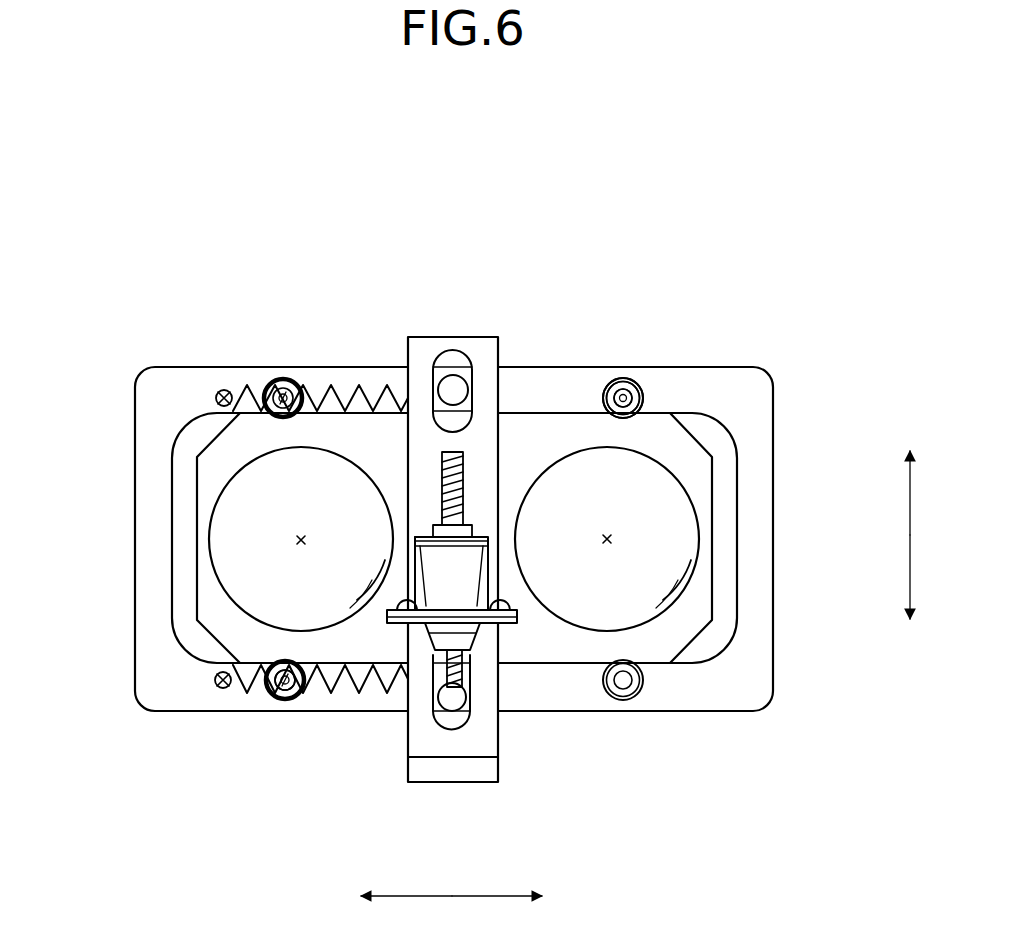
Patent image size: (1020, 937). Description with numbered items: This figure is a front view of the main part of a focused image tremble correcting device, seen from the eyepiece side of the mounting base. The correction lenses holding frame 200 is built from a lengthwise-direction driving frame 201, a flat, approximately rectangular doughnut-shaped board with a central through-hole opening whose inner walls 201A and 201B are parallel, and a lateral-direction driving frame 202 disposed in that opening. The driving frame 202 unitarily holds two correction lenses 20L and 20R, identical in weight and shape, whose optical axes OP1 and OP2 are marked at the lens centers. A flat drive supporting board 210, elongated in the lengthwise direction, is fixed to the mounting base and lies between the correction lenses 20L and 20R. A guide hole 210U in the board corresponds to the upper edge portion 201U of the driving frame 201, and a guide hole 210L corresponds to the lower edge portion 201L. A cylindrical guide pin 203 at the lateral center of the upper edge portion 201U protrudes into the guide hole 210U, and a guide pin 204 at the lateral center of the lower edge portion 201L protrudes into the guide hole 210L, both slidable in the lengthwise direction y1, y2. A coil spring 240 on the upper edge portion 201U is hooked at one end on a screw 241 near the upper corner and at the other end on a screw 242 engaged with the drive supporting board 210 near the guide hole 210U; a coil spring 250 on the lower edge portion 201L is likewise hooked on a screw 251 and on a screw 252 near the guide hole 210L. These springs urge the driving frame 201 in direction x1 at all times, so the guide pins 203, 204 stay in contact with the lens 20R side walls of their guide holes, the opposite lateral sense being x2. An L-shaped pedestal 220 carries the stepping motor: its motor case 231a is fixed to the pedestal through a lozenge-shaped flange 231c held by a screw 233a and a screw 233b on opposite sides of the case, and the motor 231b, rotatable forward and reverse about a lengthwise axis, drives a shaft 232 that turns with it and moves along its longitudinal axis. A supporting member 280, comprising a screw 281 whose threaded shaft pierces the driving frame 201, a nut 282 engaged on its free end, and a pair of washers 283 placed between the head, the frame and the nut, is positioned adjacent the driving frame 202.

The correction lenses holding frame 200 is at (821, 374).
The lengthwise-direction driving frame 201 is at (133, 369).
The upper edge portion 201U is at (563, 367).
The inner wall 201A is at (520, 413).
The lower edge portion 201L is at (730, 685).
The inner wall 201B is at (692, 665).
The lateral-direction driving frame 202 is at (675, 447).
The guide pin 203 is at (447, 374).
The guide pin 204 is at (455, 757).
The drive supporting board 210 is at (436, 337).
The guide hole 210U is at (457, 352).
The guide hole 210L is at (432, 760).
The pedestal 220 is at (497, 668).
The motor case 231a is at (483, 533).
The motor 231b is at (492, 700).
The flange 231c is at (428, 536).
The shaft 232 is at (495, 771).
The screw 233a is at (406, 612).
The screw 233b is at (507, 608).
The coil spring 240 is at (333, 385).
The screw 241 is at (215, 388).
The screw 242 is at (412, 388).
The coil spring 250 is at (318, 700).
The screw 251 is at (218, 690).
The screw 252 is at (412, 695).
The supporting member 280 is at (263, 381).
The screw 281 is at (645, 388).
The nut 282 is at (632, 378).
The washers 283 is at (604, 385).
The correction lens 20L is at (232, 502).
The correction lens 20R is at (668, 490).
The optical axis OP1 is at (296, 542).
The optical axis OP2 is at (612, 540).
The direction x1 is at (518, 899).
The direction x2 is at (386, 899).
The direction y1 is at (909, 471).
The direction y2 is at (909, 599).